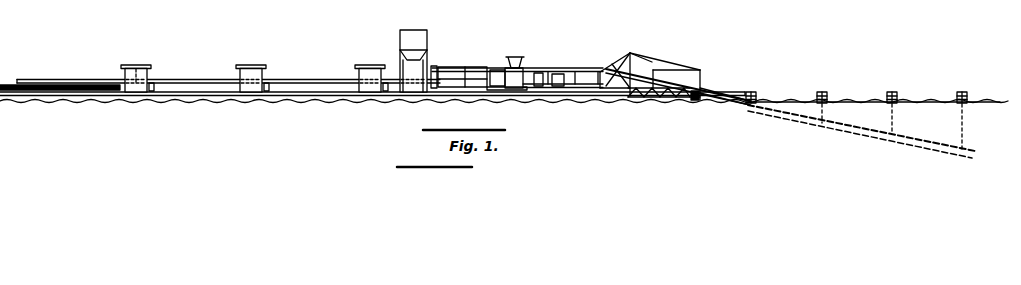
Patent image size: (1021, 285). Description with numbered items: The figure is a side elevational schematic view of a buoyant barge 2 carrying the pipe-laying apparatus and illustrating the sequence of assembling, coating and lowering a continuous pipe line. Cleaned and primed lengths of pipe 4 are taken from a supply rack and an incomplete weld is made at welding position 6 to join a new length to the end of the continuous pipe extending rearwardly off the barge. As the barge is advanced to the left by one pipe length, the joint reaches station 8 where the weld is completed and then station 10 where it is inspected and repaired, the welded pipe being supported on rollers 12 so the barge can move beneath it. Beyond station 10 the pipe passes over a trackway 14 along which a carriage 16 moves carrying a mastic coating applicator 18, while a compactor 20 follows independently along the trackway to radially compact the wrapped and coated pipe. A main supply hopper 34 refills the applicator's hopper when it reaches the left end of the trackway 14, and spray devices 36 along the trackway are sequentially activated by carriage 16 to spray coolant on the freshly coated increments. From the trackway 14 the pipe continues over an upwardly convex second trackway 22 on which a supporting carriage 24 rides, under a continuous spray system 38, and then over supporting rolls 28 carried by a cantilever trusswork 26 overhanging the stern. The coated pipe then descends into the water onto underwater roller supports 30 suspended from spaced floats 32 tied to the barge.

The buoyant barge 2 is at (308, 97).
The length of pipe 4 is at (70, 82).
The welding position 6 is at (136, 65).
The weld completion station 8 is at (251, 65).
The weld inspection station 10 is at (368, 65).
The rollers 12 is at (152, 82).
The trackway 14 is at (430, 90).
The carriage 16 is at (500, 89).
The mastic coating applicator 18 is at (515, 57).
The compactor 20 is at (548, 73).
The second trackway 22 is at (577, 88).
The supporting carriage 24 is at (558, 74).
The cantilever trusswork 26 is at (631, 53).
The supporting rolls 28 is at (688, 80).
The underwater roller supports 30 is at (838, 110).
The floats 32 is at (753, 93).
The main supply hopper 34 is at (418, 33).
The spray devices 36 is at (505, 60).
The spray system 38 is at (604, 66).